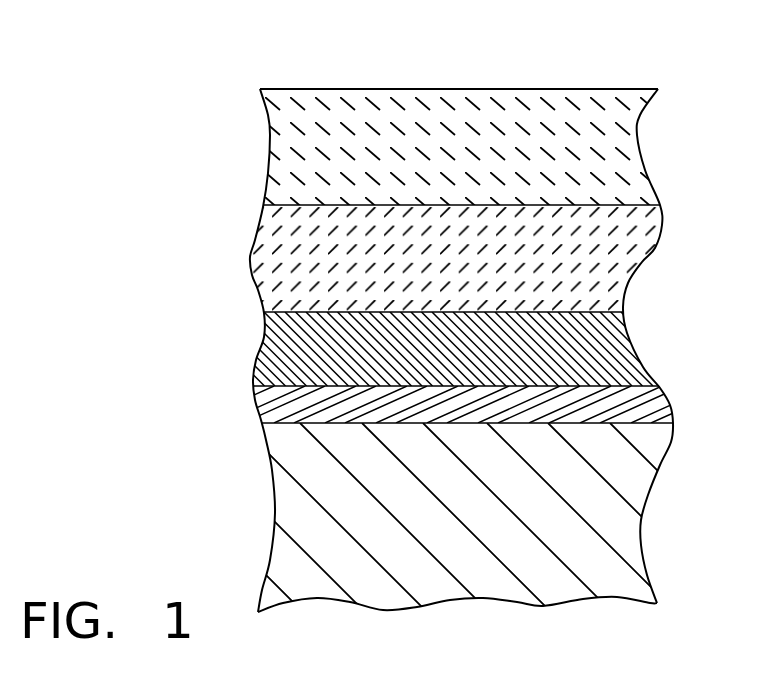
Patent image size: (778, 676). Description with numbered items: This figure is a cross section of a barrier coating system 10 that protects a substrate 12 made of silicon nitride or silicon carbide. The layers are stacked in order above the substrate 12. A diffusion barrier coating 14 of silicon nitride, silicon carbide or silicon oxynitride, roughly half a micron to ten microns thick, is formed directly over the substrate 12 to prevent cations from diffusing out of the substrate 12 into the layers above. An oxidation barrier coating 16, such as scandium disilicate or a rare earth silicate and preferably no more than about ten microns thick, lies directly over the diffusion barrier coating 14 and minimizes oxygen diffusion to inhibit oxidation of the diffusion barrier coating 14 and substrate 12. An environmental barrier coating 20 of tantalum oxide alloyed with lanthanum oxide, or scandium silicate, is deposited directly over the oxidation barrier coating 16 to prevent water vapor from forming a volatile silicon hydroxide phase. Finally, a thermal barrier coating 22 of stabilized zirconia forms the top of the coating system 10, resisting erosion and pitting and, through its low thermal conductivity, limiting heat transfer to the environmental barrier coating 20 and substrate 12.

The barrier coating system 10 is at (202, 77).
The substrate 12 is at (627, 478).
The diffusion barrier coating 14 is at (638, 405).
The oxidation barrier coating 16 is at (607, 350).
The environmental barrier coating 20 is at (610, 242).
The thermal barrier coating 22 is at (603, 163).